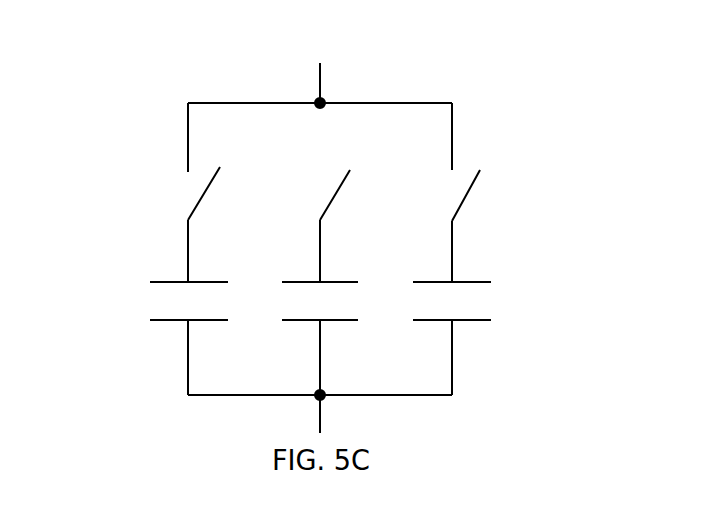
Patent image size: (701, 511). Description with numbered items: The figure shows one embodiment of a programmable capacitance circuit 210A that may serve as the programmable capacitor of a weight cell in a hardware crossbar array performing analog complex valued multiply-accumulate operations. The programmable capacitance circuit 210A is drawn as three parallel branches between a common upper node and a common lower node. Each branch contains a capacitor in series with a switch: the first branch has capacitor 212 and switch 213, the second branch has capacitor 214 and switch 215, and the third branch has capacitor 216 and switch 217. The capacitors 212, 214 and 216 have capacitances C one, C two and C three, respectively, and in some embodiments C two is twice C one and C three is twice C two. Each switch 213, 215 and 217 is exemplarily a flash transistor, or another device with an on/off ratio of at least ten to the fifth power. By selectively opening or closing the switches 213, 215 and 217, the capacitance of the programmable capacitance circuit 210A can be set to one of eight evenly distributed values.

The programmable capacitance circuit 210A is at (355, 51).
The capacitor 212 is at (135, 298).
The switch 213 is at (154, 192).
The capacitor 214 is at (265, 296).
The switch 215 is at (294, 193).
The capacitor 216 is at (505, 298).
The switch 217 is at (415, 192).